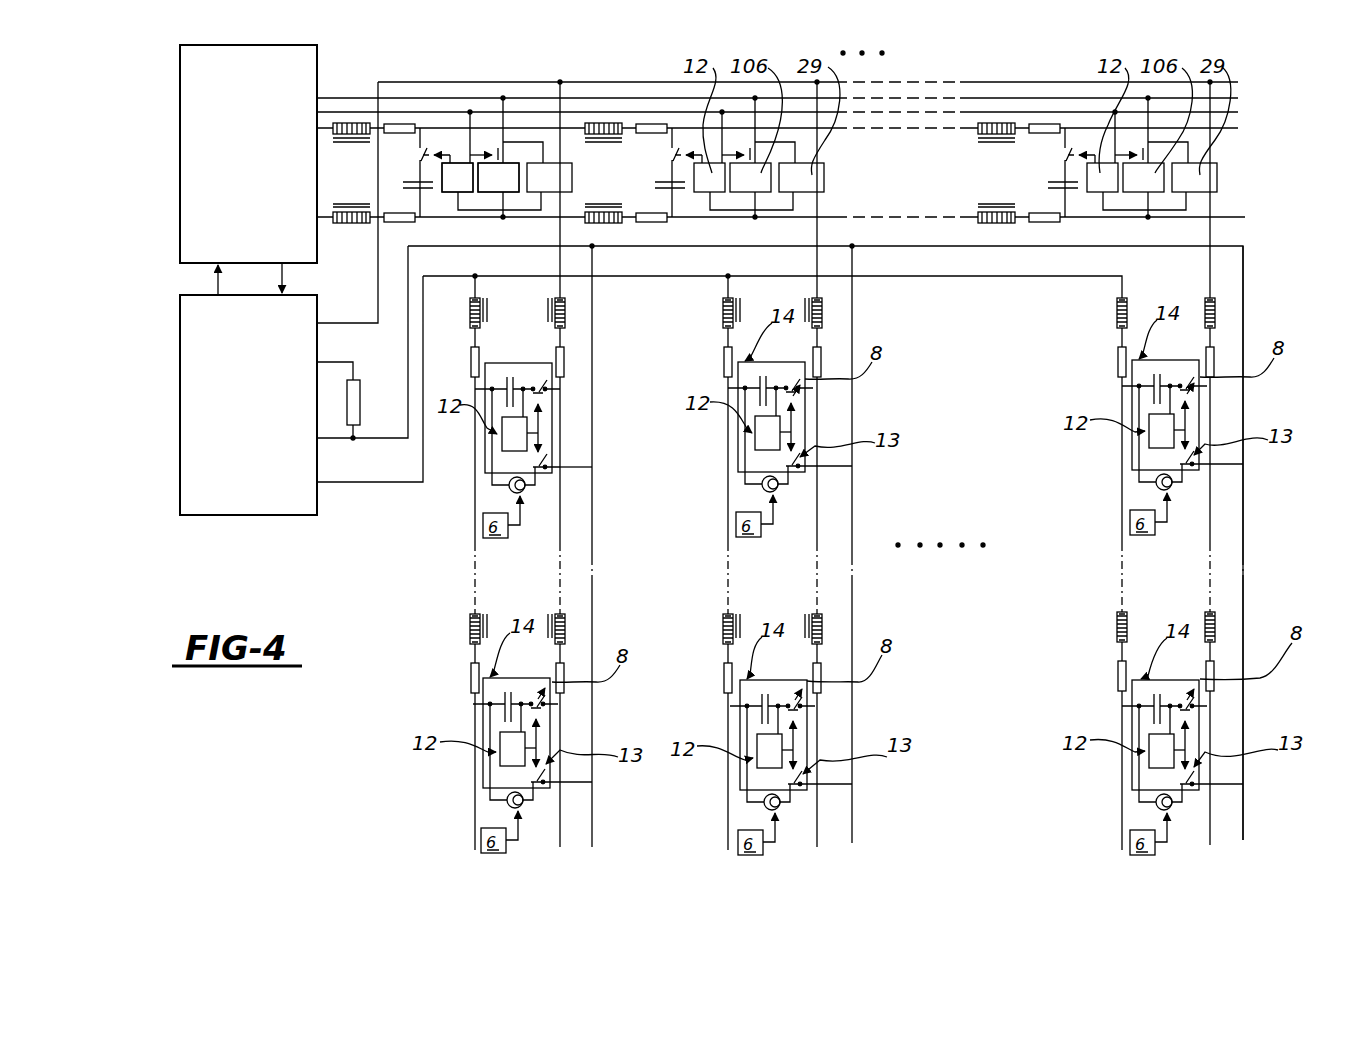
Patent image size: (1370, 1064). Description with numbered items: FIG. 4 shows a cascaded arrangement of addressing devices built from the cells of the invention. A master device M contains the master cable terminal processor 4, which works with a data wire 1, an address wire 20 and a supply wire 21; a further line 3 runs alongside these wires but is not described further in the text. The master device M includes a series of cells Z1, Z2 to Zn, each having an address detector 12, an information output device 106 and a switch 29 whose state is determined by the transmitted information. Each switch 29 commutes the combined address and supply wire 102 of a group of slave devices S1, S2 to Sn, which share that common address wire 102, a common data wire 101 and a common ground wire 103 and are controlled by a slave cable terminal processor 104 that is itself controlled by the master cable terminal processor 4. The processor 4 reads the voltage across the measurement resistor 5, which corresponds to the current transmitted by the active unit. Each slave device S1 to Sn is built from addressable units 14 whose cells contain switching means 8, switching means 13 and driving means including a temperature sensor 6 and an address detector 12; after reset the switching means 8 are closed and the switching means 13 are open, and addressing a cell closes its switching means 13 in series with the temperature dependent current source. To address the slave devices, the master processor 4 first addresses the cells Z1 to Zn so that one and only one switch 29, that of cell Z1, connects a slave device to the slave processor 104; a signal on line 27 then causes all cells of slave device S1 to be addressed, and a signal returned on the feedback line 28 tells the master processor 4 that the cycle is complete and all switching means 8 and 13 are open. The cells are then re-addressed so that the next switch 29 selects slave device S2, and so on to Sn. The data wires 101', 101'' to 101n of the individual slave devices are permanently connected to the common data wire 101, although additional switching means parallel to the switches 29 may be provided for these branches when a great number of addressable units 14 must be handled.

The data wire 1 is at (347, 96).
The return line 3 is at (957, 214).
The cable terminal processor 4 is at (254, 171).
The measurement resistor 5 is at (375, 383).
The temperature sensor 6 is at (501, 517).
The switching means 8 is at (540, 384).
The address detector 12 is at (456, 174).
The switching means 13 is at (547, 449).
The addressable unit 14 is at (490, 361).
The address wire 20 is at (940, 138).
The supply wire 21 is at (972, 110).
The line 27 is at (284, 274).
The feedback line 28 is at (216, 278).
The switch 29 is at (553, 175).
The common data wire 101 is at (825, 542).
The data wire 101' is at (634, 546).
The data wire 101'' is at (906, 544).
The data wire 101n is at (1248, 556).
The common address wire 102 is at (1020, 80).
The common ground wire 103 is at (1102, 279).
The slave cable terminal processor 104 is at (270, 424).
The information output device 106 is at (505, 174).
The master device M is at (1248, 190).
The slave device S1 is at (462, 603).
The slave device S2 is at (714, 613).
The slave device Sn is at (1110, 582).
The cell Z1 is at (452, 133).
The cell Z2 is at (704, 132).
The cell Zn is at (1058, 132).